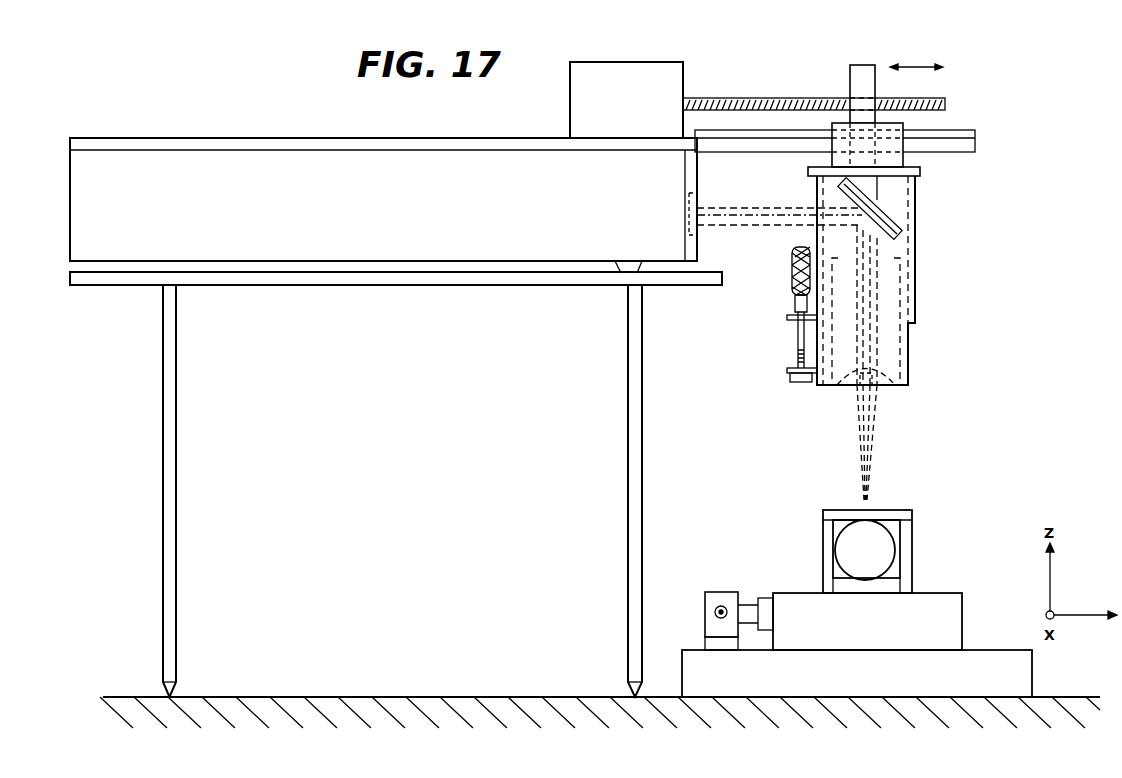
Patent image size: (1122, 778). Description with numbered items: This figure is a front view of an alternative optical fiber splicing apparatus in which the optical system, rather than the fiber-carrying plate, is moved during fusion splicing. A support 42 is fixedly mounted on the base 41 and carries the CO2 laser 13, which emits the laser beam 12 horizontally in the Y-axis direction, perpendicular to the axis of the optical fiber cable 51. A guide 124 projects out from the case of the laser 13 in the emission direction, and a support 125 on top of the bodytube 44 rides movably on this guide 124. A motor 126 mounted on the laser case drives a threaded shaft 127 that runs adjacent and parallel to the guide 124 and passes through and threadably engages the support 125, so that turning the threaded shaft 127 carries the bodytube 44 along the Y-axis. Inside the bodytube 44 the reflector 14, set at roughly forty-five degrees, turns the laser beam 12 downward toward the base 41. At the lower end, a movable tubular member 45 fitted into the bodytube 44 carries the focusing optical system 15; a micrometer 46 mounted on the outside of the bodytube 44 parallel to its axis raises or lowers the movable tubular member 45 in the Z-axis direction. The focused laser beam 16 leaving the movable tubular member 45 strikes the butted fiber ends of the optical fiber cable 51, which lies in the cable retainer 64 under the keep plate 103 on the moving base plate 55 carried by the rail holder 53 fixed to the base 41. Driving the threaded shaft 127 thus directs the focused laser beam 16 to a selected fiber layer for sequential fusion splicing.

The laser beam 12 is at (752, 207).
The CO2 laser 13 is at (432, 137).
The reflector 14 is at (892, 222).
The focusing optical system 15 is at (886, 387).
The focused laser beam 16 is at (872, 430).
The base 41 is at (465, 697).
The support 42 is at (466, 286).
The bodytube 44 is at (917, 290).
The movable tubular member 45 is at (910, 355).
The micrometer 46 is at (790, 291).
The optical fiber cable 51 is at (888, 548).
The rail holder 53 is at (1035, 672).
The moving base plate 55 is at (953, 597).
The cable retainer 64 is at (912, 530).
The keep plate 103 is at (905, 512).
The guide 124 is at (978, 140).
The support 125 is at (906, 126).
The motor 126 is at (672, 66).
The threaded shaft 127 is at (771, 97).